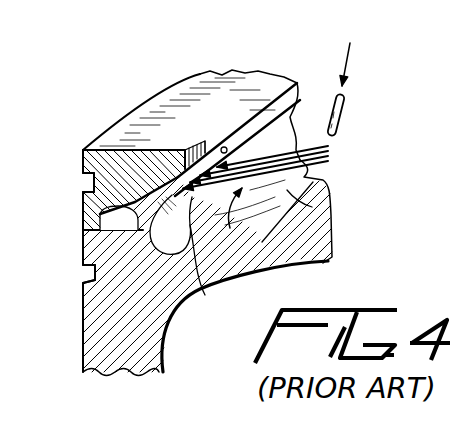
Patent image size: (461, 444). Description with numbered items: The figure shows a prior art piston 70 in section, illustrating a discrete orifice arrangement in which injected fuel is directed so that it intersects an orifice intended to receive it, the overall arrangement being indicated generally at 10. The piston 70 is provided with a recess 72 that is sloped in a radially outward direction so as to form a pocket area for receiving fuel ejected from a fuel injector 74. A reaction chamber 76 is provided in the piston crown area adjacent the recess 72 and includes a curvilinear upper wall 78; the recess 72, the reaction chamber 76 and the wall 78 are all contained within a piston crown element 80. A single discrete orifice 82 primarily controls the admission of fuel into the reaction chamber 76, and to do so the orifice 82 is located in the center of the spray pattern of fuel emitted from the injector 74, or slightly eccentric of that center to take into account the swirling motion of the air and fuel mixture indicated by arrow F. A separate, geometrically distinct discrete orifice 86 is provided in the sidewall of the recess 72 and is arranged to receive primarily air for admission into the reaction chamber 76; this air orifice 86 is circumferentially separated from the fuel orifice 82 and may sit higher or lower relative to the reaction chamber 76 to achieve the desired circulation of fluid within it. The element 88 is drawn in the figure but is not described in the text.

The engine 10 is at (451, 224).
The piston 70 is at (110, 338).
The recess 72 is at (325, 208).
The fuel injector 74 is at (344, 112).
The reaction chamber 76 is at (82, 251).
The curvilinear upper wall 78 is at (84, 191).
The piston crown element 80 is at (92, 150).
The discrete orifice 82 is at (203, 293).
The discrete orifice 86 is at (212, 138).
The valve seat insert 88 is at (249, 112).
The arrow F is at (250, 270).